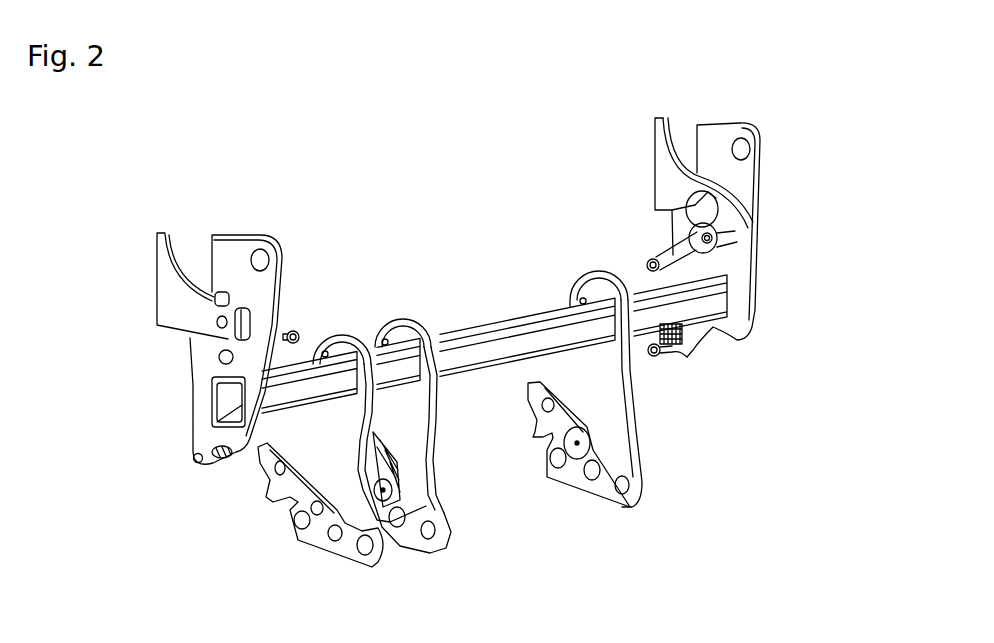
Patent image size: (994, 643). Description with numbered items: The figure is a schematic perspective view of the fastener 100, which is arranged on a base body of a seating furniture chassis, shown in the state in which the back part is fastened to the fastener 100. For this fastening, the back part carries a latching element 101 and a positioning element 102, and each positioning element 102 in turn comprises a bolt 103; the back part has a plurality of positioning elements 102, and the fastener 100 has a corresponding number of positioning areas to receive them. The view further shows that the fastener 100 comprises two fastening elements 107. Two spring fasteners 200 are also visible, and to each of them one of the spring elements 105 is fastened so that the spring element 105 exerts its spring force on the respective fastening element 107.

The fastener 100 is at (489, 345).
The latching element 101 is at (457, 265).
The positioning element 102 is at (247, 483).
The bolt 103 is at (385, 492).
The spring element 105 is at (680, 352).
The fastening element 107 is at (733, 227).
The spring fastener 200 is at (297, 333).